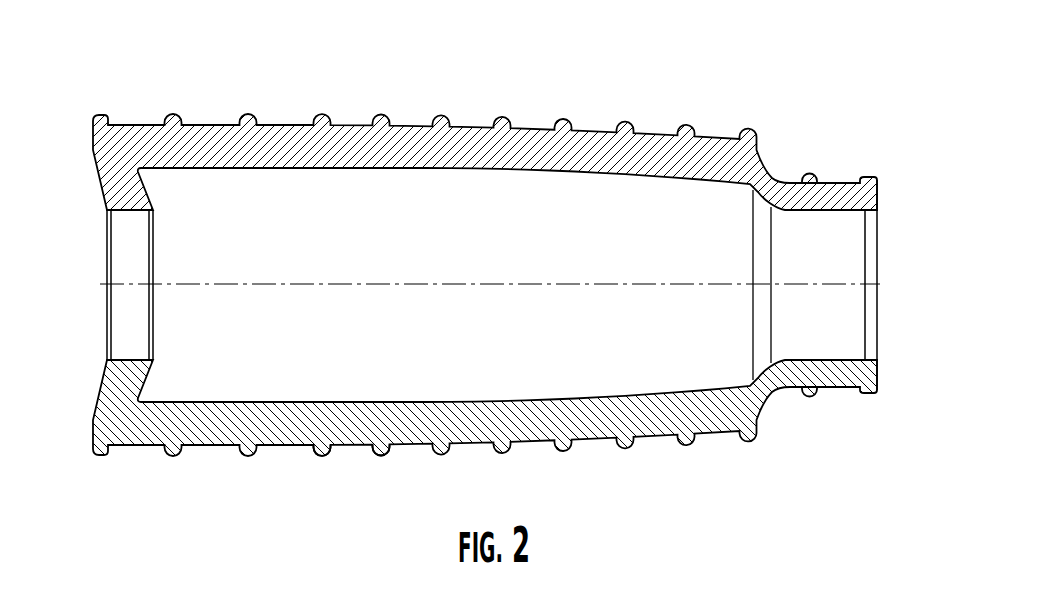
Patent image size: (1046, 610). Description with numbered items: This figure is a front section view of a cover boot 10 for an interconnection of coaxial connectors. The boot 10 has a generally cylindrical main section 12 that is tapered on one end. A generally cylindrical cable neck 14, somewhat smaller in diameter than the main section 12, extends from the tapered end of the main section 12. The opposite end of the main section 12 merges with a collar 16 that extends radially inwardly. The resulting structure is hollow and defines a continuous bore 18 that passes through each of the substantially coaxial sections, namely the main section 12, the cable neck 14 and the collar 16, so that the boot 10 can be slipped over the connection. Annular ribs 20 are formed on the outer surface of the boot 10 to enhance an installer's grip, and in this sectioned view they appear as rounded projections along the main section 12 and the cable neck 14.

The cover boot 10 is at (502, 287).
The main section 12 is at (437, 444).
The cable neck 14 is at (826, 370).
The collar 16 is at (123, 202).
The bore 18 is at (883, 283).
The annular ribs 20 is at (383, 453).